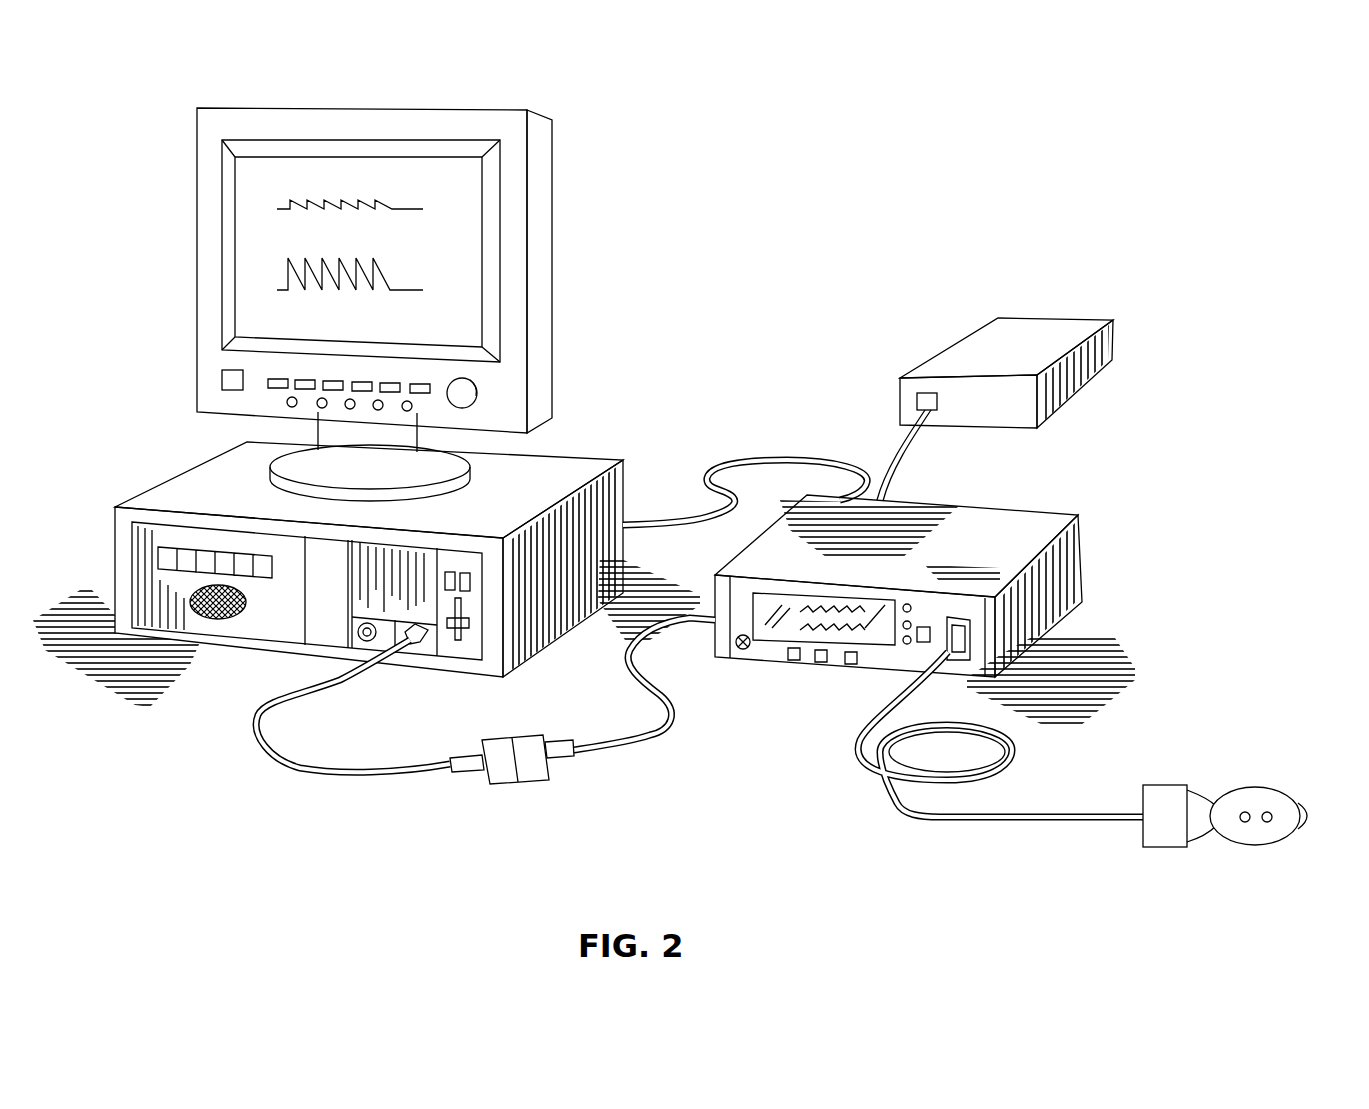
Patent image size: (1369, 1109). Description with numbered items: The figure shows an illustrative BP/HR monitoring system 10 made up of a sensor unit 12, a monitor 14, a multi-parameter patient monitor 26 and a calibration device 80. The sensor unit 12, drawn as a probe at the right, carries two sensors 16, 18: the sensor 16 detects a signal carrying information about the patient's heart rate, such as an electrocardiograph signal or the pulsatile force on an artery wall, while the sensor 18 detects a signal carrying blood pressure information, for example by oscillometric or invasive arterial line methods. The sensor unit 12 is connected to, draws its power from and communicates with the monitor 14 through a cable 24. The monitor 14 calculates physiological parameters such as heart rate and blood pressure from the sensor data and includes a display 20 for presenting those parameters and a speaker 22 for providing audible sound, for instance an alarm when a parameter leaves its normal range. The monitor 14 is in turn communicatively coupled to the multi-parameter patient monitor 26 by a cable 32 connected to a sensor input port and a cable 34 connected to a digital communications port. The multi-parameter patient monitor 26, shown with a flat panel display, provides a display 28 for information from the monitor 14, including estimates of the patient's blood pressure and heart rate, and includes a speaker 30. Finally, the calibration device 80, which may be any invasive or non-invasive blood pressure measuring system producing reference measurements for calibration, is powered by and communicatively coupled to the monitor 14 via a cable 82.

The BP/HR monitoring system 10 is at (918, 253).
The sensor unit 12 is at (1318, 786).
The monitor 14 is at (978, 505).
The sensor 16 is at (1245, 822).
The sensor 18 is at (1268, 822).
The display 20 is at (785, 635).
The speaker 22 is at (742, 657).
The cable 24 is at (890, 800).
The multi-parameter patient monitor 26 is at (547, 183).
The display 28 is at (262, 272).
The speaker 30 is at (218, 615).
The cable 32 is at (617, 752).
The cable 34 is at (798, 460).
The calibration device 80 is at (1053, 318).
The cable 82 is at (897, 480).